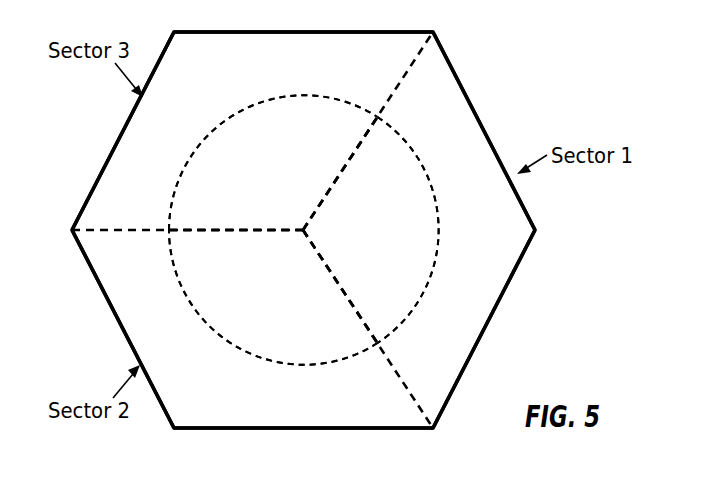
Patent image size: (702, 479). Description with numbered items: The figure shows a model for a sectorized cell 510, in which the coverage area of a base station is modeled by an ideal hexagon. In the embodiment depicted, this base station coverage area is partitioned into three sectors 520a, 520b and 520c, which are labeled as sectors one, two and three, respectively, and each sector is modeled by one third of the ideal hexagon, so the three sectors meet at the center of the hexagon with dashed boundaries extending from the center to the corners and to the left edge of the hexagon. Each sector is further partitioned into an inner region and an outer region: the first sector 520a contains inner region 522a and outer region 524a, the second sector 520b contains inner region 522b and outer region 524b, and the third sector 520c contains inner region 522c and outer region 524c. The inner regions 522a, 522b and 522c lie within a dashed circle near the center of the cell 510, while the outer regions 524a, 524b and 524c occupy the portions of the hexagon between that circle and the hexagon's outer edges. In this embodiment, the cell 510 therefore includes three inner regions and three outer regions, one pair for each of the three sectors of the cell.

The sectorized cell 510 is at (565, 59).
The sector 1 520a is at (484, 128).
The sector 2 520b is at (108, 296).
The sector 3 520c is at (106, 164).
The inner region of sector 1 522a is at (371, 230).
The inner region of sector 2 522b is at (273, 297).
The inner region of sector 3 522c is at (273, 162).
The outer region of sector 1 524a is at (457, 272).
The outer region of sector 2 524b is at (301, 329).
The outer region of sector 3 524c is at (301, 131).